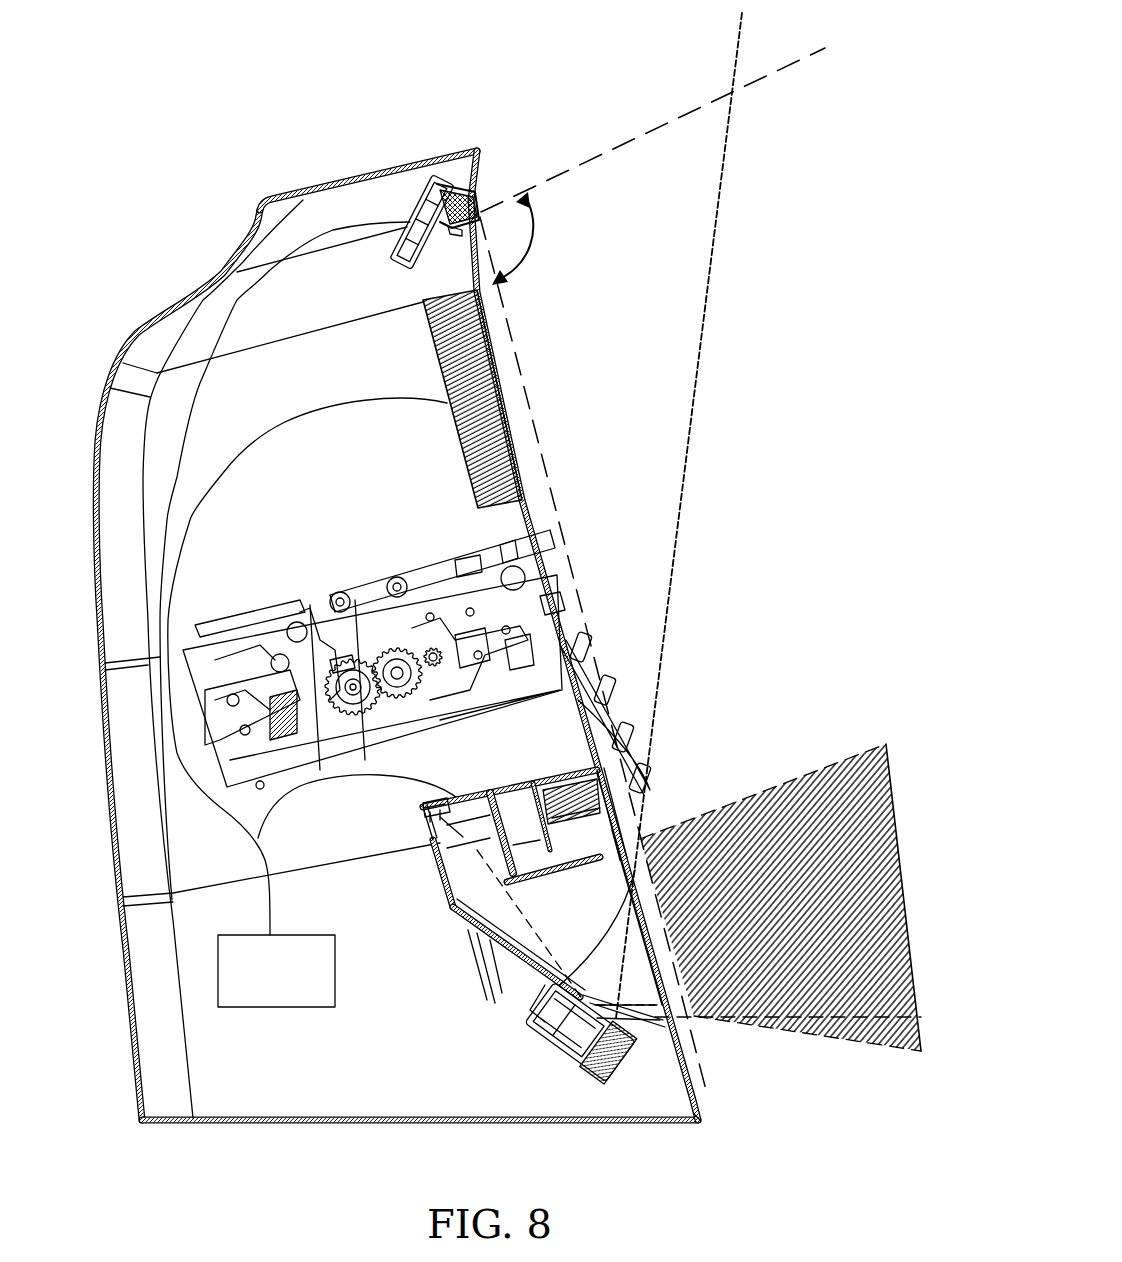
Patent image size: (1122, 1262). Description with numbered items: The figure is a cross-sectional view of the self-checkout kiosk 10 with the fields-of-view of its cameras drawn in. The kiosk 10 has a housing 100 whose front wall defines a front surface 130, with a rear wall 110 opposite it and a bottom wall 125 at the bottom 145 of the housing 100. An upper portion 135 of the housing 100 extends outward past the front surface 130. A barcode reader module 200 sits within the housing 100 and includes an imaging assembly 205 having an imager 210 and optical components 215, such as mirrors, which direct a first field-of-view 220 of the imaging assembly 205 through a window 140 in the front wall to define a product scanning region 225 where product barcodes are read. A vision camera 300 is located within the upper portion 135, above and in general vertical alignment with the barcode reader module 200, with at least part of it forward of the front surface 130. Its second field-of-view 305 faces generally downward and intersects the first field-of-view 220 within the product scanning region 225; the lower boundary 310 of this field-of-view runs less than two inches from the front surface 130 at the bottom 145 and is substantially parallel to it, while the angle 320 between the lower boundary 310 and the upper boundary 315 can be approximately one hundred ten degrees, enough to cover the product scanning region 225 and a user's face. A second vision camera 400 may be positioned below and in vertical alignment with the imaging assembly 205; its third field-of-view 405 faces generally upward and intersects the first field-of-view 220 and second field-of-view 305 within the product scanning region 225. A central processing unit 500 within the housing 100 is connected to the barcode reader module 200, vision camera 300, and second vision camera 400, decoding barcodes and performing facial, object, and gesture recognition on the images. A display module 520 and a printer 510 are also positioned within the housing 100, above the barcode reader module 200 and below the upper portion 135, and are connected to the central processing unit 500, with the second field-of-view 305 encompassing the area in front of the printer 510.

The self-checkout kiosk 10 is at (138, 198).
The housing 100 is at (120, 334).
The rear wall 110 is at (100, 731).
The bottom wall 125 is at (428, 1126).
The front surface 130 is at (590, 640).
The upper portion 135 is at (450, 140).
The window 140 is at (650, 916).
The bottom 145 is at (712, 1120).
The barcode reader module 200 is at (392, 830).
The imaging assembly 205 is at (481, 881).
The imager 210 is at (432, 856).
The optical components 215 is at (640, 885).
The first field-of-view 220 is at (808, 760).
The product scanning region 225 is at (780, 897).
The vision camera 300 is at (488, 170).
The second field-of-view 305 is at (678, 110).
The lower boundary 310 is at (532, 444).
The upper boundary 315 is at (599, 158).
The angle 320 is at (542, 250).
The second vision camera 400 is at (607, 1067).
The third field-of-view 405 is at (722, 301).
The central processing unit 500 is at (276, 971).
The printer 510 is at (376, 566).
The display module 520 is at (463, 481).